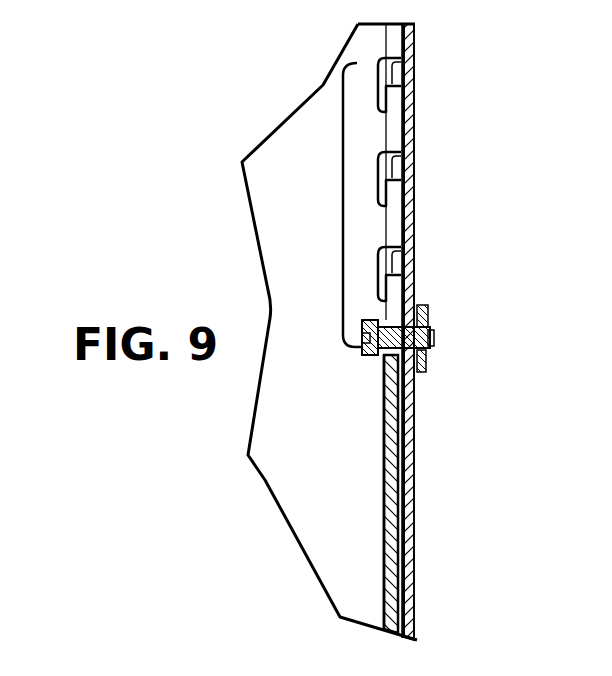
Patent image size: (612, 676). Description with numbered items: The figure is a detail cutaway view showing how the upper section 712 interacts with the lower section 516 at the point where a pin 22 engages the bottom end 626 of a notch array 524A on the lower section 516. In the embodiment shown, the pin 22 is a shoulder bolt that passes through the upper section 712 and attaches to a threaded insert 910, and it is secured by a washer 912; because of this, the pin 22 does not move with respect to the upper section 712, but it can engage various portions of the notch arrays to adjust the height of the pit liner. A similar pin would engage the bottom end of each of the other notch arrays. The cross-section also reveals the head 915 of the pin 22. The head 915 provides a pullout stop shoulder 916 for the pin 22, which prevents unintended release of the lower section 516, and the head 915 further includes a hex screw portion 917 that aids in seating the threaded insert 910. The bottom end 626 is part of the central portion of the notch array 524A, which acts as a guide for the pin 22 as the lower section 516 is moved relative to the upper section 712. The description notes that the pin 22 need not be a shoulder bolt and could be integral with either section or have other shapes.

The notch array 524A is at (343, 205).
The hex screw portion 917 is at (405, 286).
The pullout stop shoulder 916 is at (423, 307).
The threaded insert 910 is at (428, 317).
The pin 22 is at (435, 342).
The washer 912 is at (420, 372).
The upper section 712 is at (412, 525).
The lower section 516 is at (384, 562).
The head 915 is at (365, 355).
The bottom end 626 is at (383, 405).